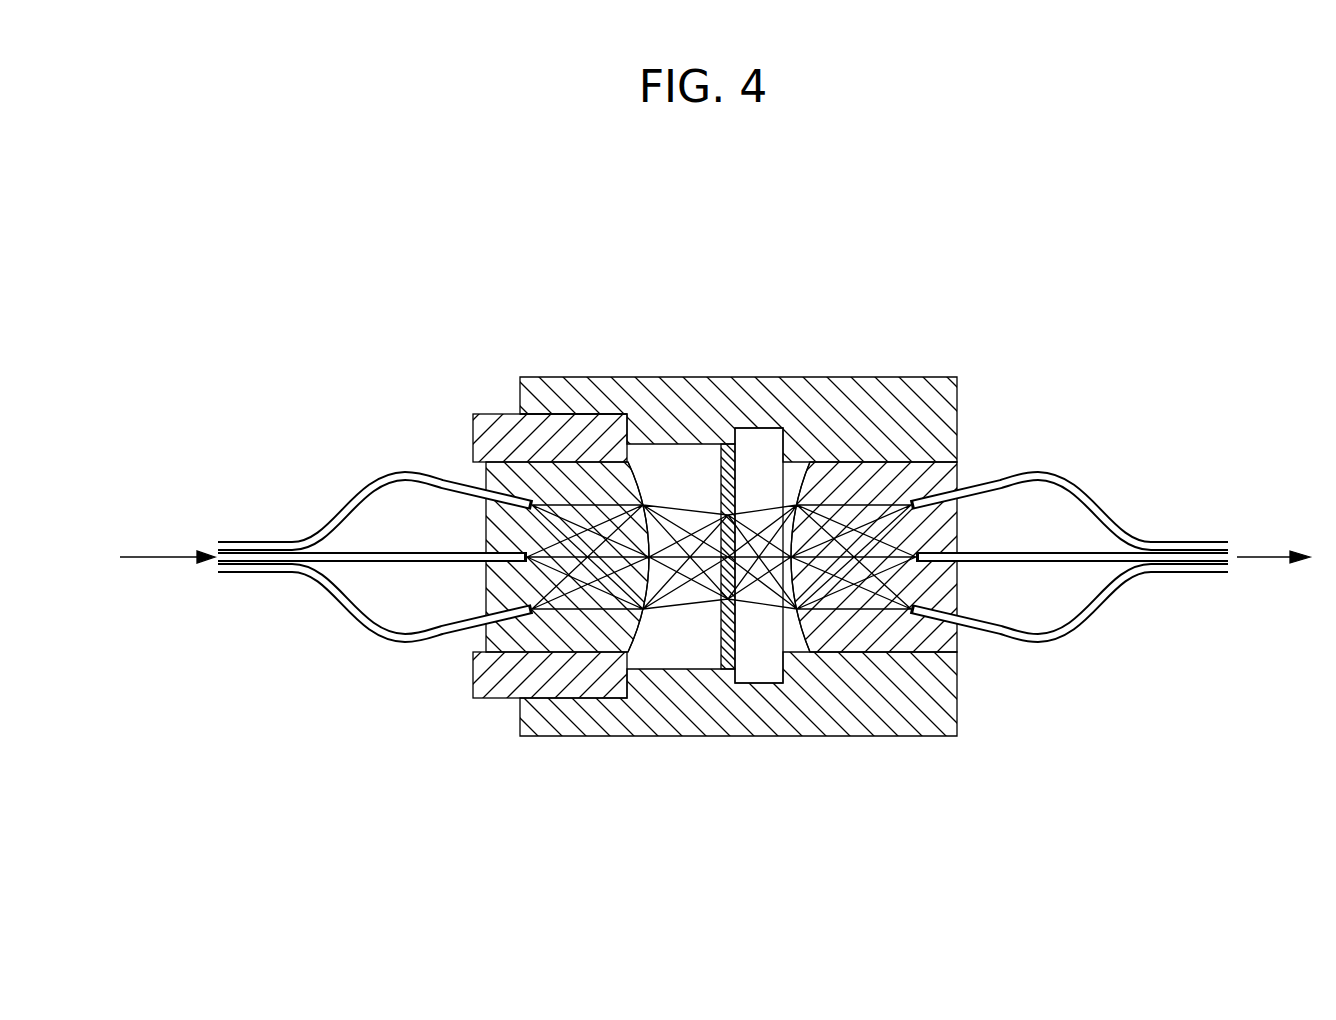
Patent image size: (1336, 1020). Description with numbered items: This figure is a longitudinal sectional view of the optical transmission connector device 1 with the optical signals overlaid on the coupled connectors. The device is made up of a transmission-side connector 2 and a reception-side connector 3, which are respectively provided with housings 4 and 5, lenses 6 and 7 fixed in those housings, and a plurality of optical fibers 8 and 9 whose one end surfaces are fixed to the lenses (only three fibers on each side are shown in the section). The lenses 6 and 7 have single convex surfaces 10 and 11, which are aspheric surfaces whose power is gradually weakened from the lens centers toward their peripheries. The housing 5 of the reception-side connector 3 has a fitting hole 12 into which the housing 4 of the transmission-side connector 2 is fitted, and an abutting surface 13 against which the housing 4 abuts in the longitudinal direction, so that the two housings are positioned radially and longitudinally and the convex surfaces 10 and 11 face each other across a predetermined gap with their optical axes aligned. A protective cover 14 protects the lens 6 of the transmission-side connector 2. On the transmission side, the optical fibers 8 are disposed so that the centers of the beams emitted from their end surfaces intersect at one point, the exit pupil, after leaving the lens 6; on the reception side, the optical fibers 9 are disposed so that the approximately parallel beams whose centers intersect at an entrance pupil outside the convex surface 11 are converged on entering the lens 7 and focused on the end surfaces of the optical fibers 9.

The optical transmission connector device 1 is at (686, 232).
The transmission-side connector 2 is at (486, 396).
The reception-side connector 3 is at (858, 365).
The housing 4 is at (497, 700).
The housing 5 is at (703, 737).
The lens 6 is at (572, 640).
The lens 7 is at (857, 635).
The optical fibers 8 is at (388, 472).
The optical fibers 9 is at (1032, 468).
The convex surface 10 is at (648, 478).
The convex surface 11 is at (786, 630).
The fitting hole 12 is at (598, 415).
The abutting surface 13 is at (722, 420).
The protective cover 14 is at (740, 462).